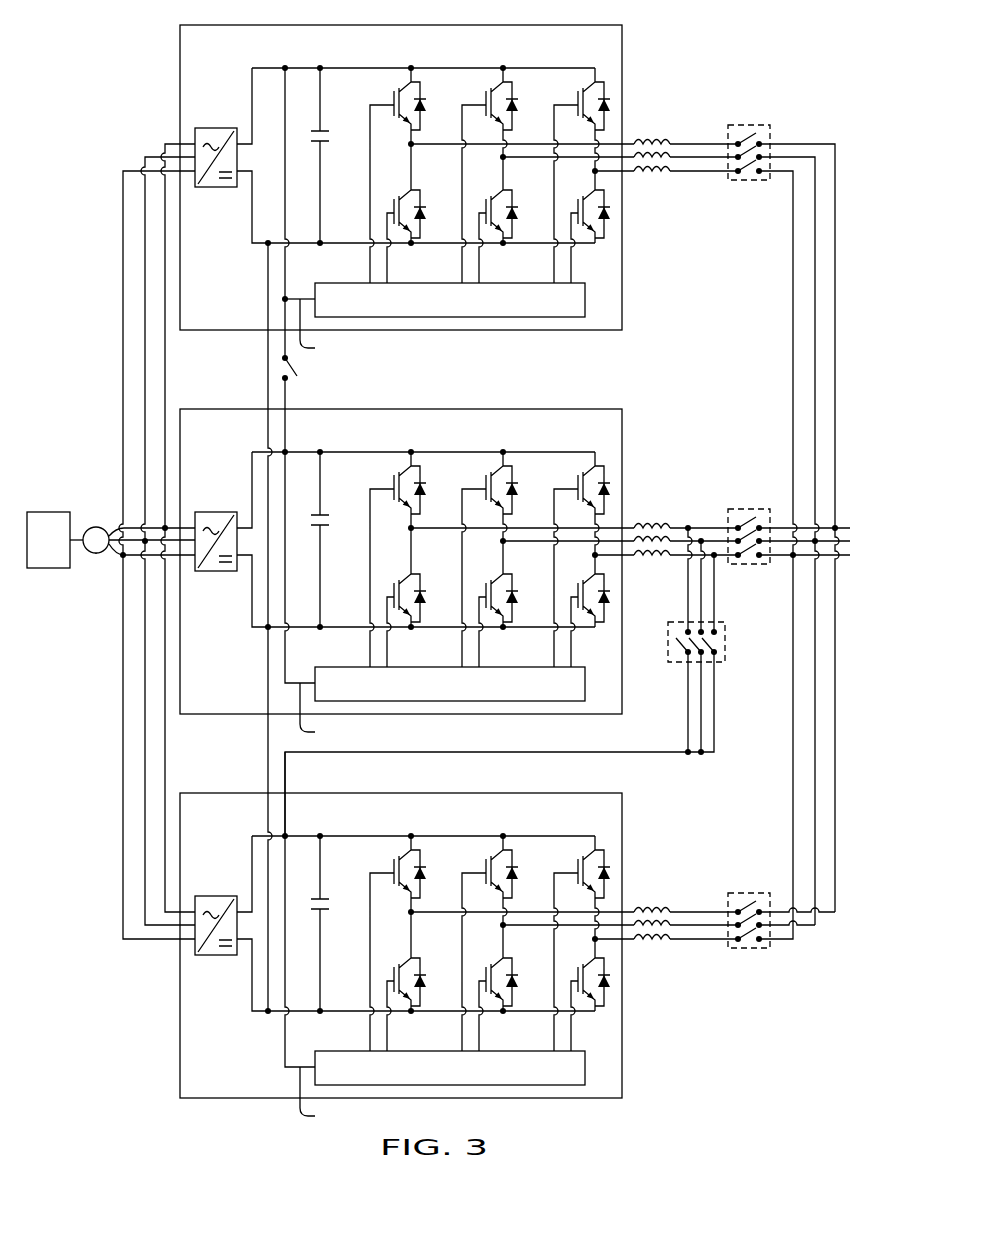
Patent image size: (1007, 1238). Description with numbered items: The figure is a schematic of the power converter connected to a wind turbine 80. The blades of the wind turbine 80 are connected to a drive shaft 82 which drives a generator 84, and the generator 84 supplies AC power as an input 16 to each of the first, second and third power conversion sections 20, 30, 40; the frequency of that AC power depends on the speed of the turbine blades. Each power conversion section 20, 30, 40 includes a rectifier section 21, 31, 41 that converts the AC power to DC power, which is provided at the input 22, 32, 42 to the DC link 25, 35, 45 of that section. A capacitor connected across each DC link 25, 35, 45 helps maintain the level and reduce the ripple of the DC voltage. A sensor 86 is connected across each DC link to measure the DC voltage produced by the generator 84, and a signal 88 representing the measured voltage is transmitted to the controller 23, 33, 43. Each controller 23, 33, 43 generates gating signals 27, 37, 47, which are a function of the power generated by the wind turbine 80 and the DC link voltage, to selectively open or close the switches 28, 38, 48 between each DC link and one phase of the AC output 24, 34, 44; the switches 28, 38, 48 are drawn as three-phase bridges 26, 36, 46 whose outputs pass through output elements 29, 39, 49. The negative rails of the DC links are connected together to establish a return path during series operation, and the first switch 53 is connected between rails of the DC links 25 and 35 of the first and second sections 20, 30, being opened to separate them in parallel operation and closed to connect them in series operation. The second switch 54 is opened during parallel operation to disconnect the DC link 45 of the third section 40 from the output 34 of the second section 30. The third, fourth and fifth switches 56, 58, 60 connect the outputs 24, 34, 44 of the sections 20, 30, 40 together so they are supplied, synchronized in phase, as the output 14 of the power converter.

The AC output 14 is at (845, 523).
The input 16 is at (172, 137).
The first power conversion section 20 is at (622, 43).
The rectifier section 21 is at (219, 128).
The input 22 is at (245, 250).
The controller 23 is at (588, 302).
The output 24 is at (626, 142).
The DC link 25 is at (325, 65).
The inverter switching bridge 26 is at (479, 135).
The gating signals 27 is at (578, 267).
The switches 28 is at (571, 203).
The output inductors 29 is at (673, 137).
The second power conversion section 30 is at (622, 427).
The rectifier section 31 is at (219, 512).
The input 32 is at (245, 634).
The controller 33 is at (588, 686).
The output 34 is at (626, 526).
The DC link 35 is at (325, 449).
The inverter switching bridge 36 is at (479, 519).
The gating signals 37 is at (578, 651).
The switches 38 is at (571, 587).
The output inductors 39 is at (673, 521).
The third power conversion section 40 is at (622, 811).
The rectifier section 41 is at (219, 896).
The input 42 is at (245, 1018).
The controller 43 is at (588, 1070).
The output 44 is at (626, 910).
The DC link 45 is at (325, 833).
The inverter switching bridge 46 is at (479, 903).
The gating signals 47 is at (578, 1035).
The switches 48 is at (571, 971).
The output inductors 49 is at (673, 905).
The first switch 53 is at (299, 372).
The second switch 54 is at (725, 645).
The third switch 56 is at (752, 125).
The fourth switch 58 is at (752, 508).
The fifth switch 60 is at (752, 893).
The wind turbine 80 is at (52, 568).
The drive shaft 82 is at (86, 528).
The generator 84 is at (97, 553).
The sensor 86 is at (290, 296).
The signal 88 is at (321, 712).